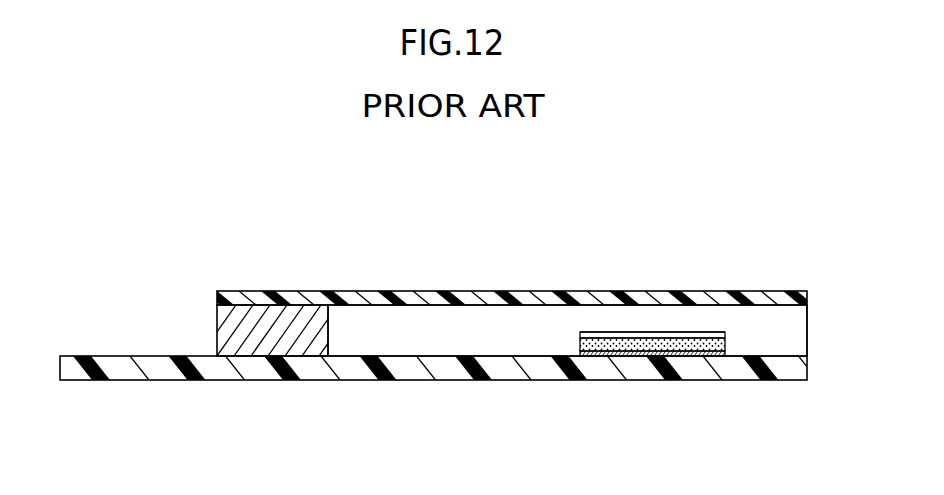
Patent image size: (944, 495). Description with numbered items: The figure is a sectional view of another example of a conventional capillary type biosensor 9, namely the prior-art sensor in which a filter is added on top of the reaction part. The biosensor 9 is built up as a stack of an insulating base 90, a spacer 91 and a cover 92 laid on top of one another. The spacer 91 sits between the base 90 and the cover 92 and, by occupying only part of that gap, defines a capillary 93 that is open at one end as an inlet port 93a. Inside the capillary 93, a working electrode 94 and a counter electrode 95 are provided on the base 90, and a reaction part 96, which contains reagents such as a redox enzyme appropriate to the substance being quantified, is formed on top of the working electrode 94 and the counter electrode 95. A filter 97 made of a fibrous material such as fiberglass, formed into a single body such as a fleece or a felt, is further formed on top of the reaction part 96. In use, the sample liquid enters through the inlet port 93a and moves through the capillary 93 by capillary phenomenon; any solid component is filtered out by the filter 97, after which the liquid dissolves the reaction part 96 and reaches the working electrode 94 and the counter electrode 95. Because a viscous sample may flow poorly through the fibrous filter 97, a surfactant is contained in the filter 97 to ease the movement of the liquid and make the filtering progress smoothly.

The biosensor 9 is at (160, 301).
The insulating base 90 is at (443, 380).
The spacer 91 is at (270, 327).
The cover 92 is at (727, 291).
The capillary 93 is at (518, 345).
The inlet port 93a is at (807, 357).
The working electrode 94 is at (640, 357).
The counter electrode 95 is at (710, 357).
The reaction part 96 is at (614, 356).
The filter 97 is at (647, 332).